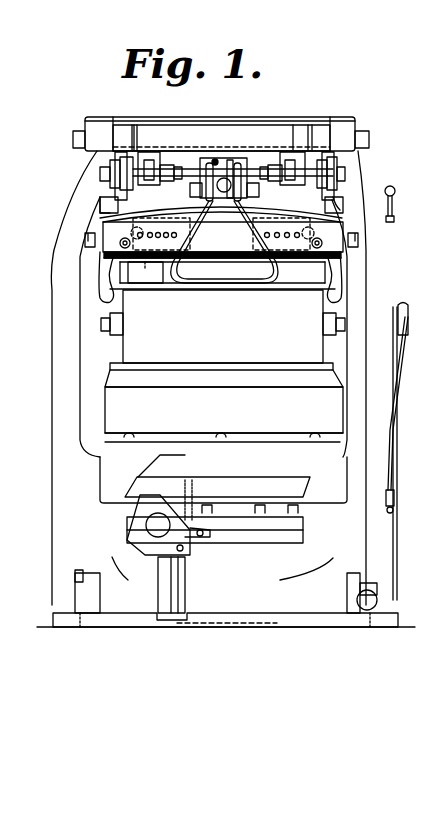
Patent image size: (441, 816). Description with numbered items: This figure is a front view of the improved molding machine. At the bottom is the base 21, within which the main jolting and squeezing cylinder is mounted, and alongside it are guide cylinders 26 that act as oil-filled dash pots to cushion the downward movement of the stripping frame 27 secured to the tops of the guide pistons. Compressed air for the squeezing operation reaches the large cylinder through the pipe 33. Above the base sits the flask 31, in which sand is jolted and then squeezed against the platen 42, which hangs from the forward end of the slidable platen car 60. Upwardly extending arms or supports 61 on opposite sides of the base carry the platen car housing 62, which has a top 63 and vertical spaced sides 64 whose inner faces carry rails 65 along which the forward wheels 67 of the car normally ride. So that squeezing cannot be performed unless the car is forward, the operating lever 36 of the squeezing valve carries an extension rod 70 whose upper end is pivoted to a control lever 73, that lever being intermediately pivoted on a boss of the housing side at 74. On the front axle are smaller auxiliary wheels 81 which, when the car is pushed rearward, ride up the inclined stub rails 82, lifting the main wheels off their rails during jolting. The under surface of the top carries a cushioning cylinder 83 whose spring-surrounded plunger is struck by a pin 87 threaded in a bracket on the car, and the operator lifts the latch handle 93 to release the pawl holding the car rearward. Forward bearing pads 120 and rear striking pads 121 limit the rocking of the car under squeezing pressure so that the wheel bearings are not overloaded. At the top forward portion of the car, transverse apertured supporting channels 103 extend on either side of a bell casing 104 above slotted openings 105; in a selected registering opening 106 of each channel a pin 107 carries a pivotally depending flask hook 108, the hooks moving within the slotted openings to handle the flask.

The base 21 is at (232, 555).
The guide cylinders 26 is at (186, 597).
The stripping frame 27 is at (263, 404).
The flask 31 is at (232, 329).
The pipe 33 is at (372, 600).
The operating lever 36 is at (396, 514).
The platen 42 is at (312, 275).
The platen car 60 is at (95, 236).
The arms or supports 61 is at (62, 365).
The platen car housing 62 is at (325, 117).
The top 63 is at (232, 133).
The sides 64 is at (110, 175).
The rails 65 is at (100, 208).
The forward wheels 67 is at (118, 160).
The extension rod 70 is at (398, 478).
The control lever 73 is at (395, 190).
The pivot 74 is at (396, 218).
The auxiliary wheels 81 is at (152, 165).
The stub rails 82 is at (150, 182).
The cylinder 83 is at (215, 160).
The pin 87 is at (224, 200).
The latch handle 93 is at (182, 282).
The supporting channels 103 is at (182, 230).
The bell casing 104 is at (195, 172).
The slotted openings 105 is at (275, 223).
The registering opening 106 is at (313, 234).
The pin 107 is at (145, 272).
The flask hook 108 is at (100, 283).
The bearing pads 120 is at (110, 198).
The striking pads 121 is at (95, 240).